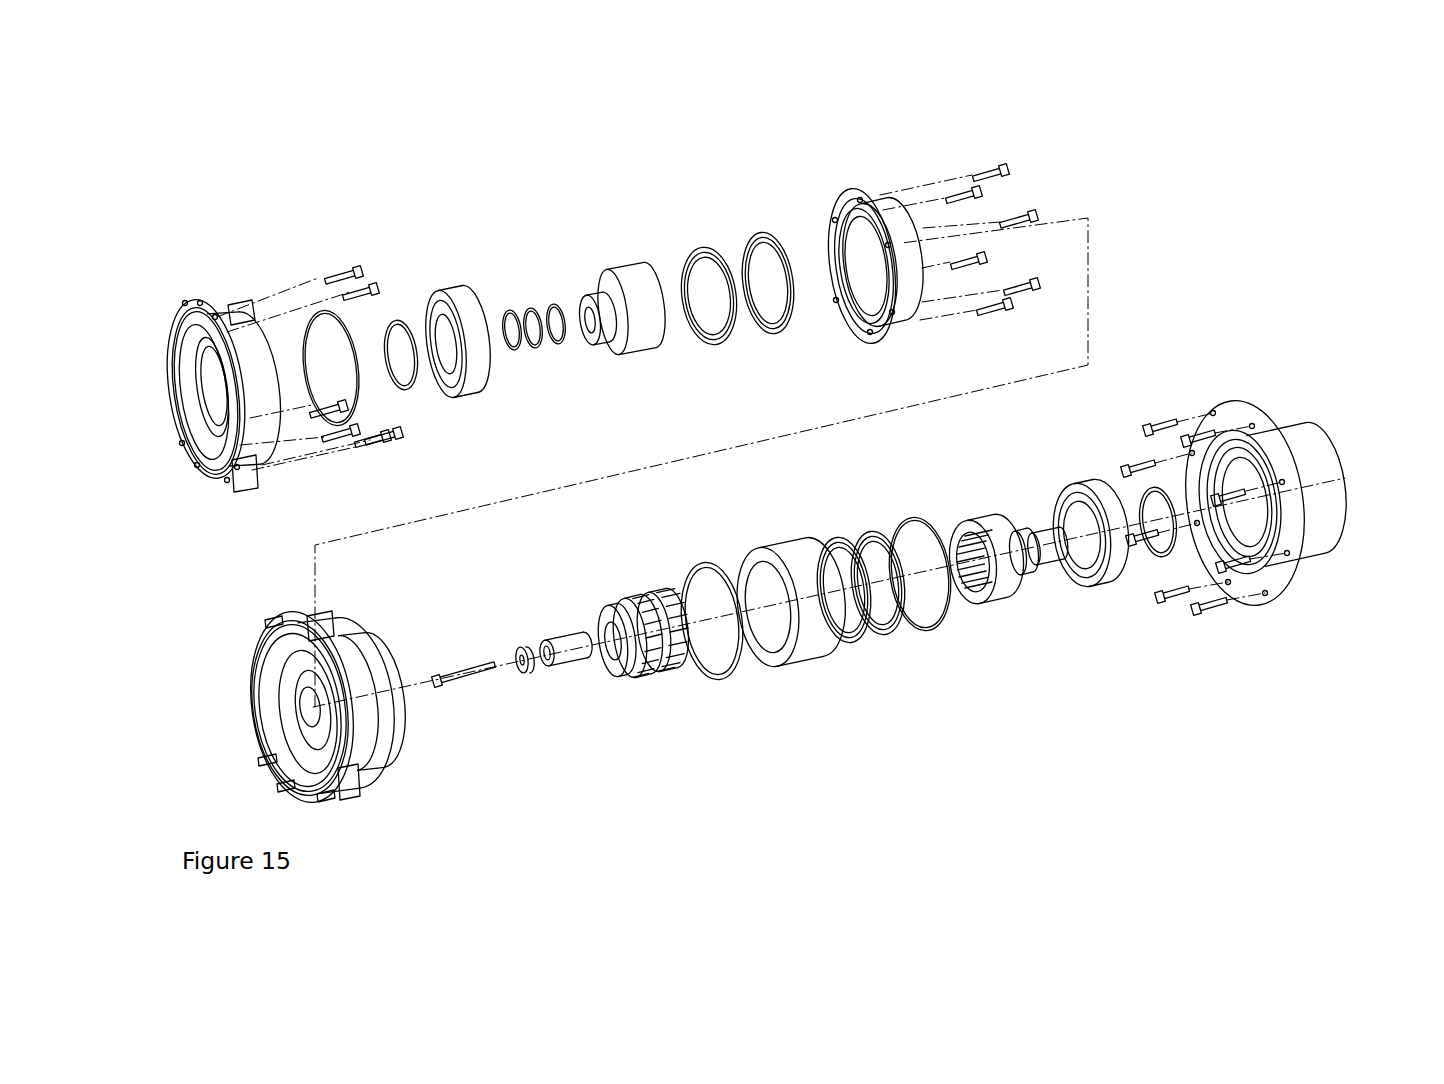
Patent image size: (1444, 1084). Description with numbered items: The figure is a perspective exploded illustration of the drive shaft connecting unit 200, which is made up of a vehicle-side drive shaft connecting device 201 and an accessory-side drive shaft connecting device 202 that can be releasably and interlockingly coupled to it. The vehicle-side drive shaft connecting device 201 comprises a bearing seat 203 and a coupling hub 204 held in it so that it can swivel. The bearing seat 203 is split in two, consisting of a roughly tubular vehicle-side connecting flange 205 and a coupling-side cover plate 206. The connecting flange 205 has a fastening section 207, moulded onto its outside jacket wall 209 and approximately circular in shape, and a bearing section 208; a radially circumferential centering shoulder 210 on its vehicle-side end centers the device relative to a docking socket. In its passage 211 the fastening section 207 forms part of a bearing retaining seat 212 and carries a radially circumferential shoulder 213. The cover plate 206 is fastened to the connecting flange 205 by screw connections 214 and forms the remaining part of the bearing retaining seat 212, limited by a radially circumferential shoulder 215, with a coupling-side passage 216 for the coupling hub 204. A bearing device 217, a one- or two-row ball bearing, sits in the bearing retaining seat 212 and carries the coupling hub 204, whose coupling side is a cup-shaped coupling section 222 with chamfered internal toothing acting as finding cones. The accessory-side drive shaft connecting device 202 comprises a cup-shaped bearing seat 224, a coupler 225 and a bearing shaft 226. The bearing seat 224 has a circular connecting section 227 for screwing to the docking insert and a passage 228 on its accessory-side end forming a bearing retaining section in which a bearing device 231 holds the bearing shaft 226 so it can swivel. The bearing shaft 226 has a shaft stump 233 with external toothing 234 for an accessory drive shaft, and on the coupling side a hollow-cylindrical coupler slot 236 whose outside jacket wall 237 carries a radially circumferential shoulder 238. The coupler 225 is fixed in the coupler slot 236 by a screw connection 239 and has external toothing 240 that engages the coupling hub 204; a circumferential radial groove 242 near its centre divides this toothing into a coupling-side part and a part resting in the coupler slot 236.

The drive shaft connecting unit 200 is at (1160, 315).
The vehicle-side drive shaft connecting device 201 is at (515, 243).
The accessory-side drive shaft connecting device 202 is at (734, 701).
The bearing seat 203 is at (234, 469).
The coupling hub 204 is at (645, 290).
The connecting flange 205 is at (207, 300).
The cover plate 206 is at (654, 383).
The fastening section 207 is at (185, 300).
The bearing section 208 is at (222, 405).
The outside jacket wall 209 is at (260, 363).
The centering shoulder 210 is at (203, 475).
The passage 211 is at (208, 372).
The bearing retaining seat 212 is at (863, 313).
The radially circumferential shoulder 213 is at (205, 340).
The screw connections 214 is at (1023, 217).
The radially circumferential shoulder 215 is at (852, 273).
The coupling-side passage 216 is at (885, 290).
The bearing device 217 is at (463, 293).
The coupling section 222 is at (664, 274).
The bearing seat 224 is at (1320, 470).
The coupler 225 is at (668, 657).
The bearing shaft 226 is at (1027, 553).
The connecting section 227 is at (1243, 415).
The passage 228 is at (1282, 481).
The bearing device 231 is at (1100, 498).
The shaft stump 233 is at (1048, 537).
The external toothing 234 is at (967, 597).
The coupler slot 236 is at (953, 530).
The outside jacket wall 237 is at (956, 571).
The radially circumferential shoulder 238 is at (1007, 510).
The screw connection 239 is at (577, 652).
The external toothing 240 is at (653, 644).
The circumferential radial groove 242 is at (654, 660).